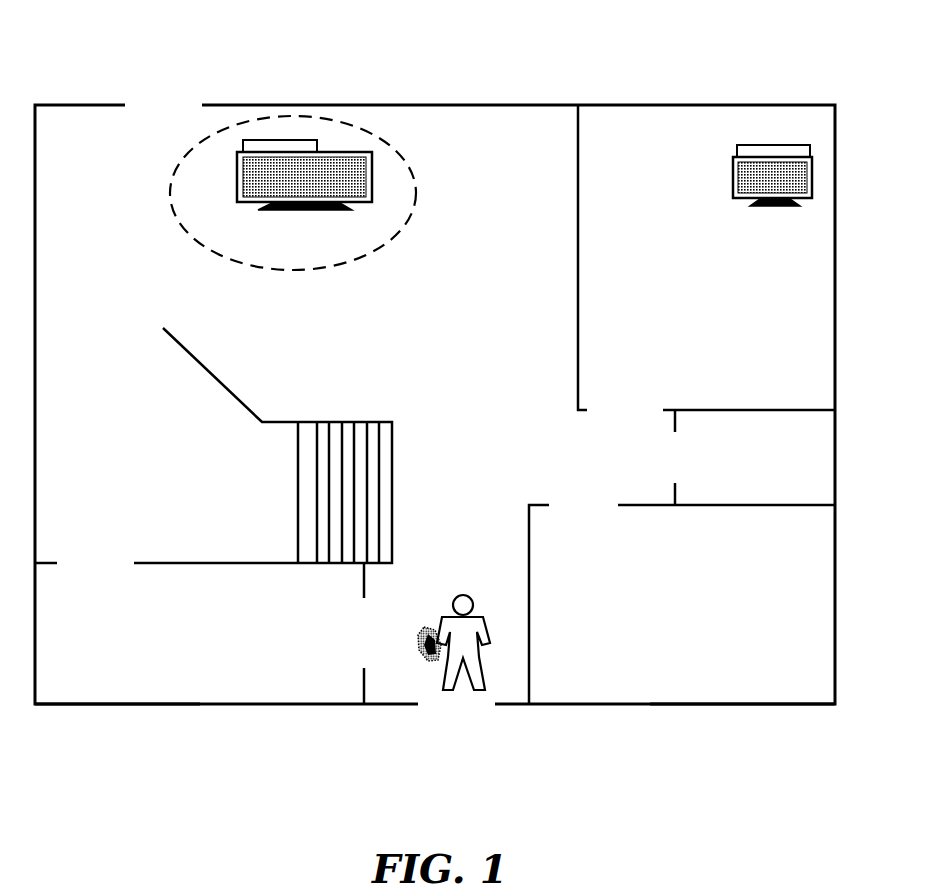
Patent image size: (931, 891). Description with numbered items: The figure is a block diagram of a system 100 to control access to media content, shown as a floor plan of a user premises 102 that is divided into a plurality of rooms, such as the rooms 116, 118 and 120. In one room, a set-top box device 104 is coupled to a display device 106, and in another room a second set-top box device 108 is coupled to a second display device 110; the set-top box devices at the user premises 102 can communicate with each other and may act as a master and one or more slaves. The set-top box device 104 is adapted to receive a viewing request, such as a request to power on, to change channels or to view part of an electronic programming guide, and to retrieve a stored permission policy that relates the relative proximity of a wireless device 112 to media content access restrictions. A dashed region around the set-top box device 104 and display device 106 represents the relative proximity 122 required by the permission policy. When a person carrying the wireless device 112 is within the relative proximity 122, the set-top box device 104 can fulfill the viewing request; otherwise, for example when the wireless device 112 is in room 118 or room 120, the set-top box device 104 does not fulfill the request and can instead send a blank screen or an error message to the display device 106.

The system 100 is at (100, 63).
The user premises 102 is at (378, 104).
The set-top box device 104 is at (245, 148).
The display device 106 is at (240, 185).
The second set-top box device 108 is at (737, 155).
The second display device 110 is at (735, 187).
The wireless device 112 is at (428, 640).
The room 116 is at (768, 410).
The room 118 is at (768, 704).
The room 120 is at (127, 703).
The relative proximity 122 is at (170, 182).